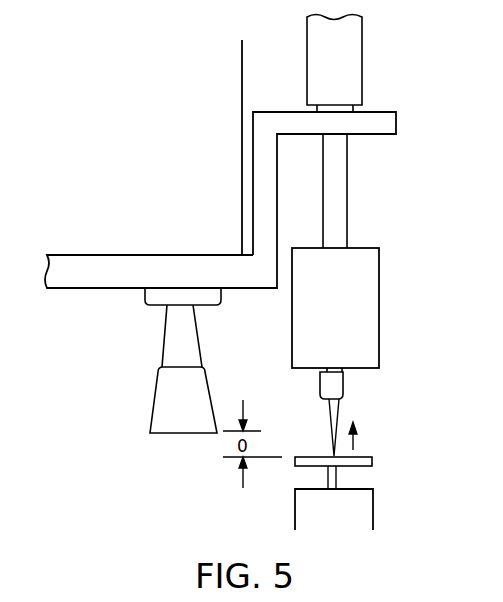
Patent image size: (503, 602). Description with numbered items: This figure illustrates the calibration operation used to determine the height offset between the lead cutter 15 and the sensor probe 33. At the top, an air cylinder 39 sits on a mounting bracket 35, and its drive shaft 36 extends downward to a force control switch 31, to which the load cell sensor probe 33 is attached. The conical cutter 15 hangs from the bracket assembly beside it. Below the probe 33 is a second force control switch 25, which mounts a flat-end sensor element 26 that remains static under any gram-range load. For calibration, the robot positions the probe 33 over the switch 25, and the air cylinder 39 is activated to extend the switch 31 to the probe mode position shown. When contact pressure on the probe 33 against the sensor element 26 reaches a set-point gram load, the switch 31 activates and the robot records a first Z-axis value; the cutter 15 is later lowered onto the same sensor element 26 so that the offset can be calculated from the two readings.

The lead cutter 15 is at (200, 383).
The force control switch 25 is at (360, 511).
The sensor element 26 is at (375, 462).
The force control switch 31 is at (370, 305).
The load cell sensor probe 33 is at (348, 413).
The mounting bracket 35 is at (385, 125).
The drive shaft 36 is at (340, 197).
The air cylinder 39 is at (350, 58).